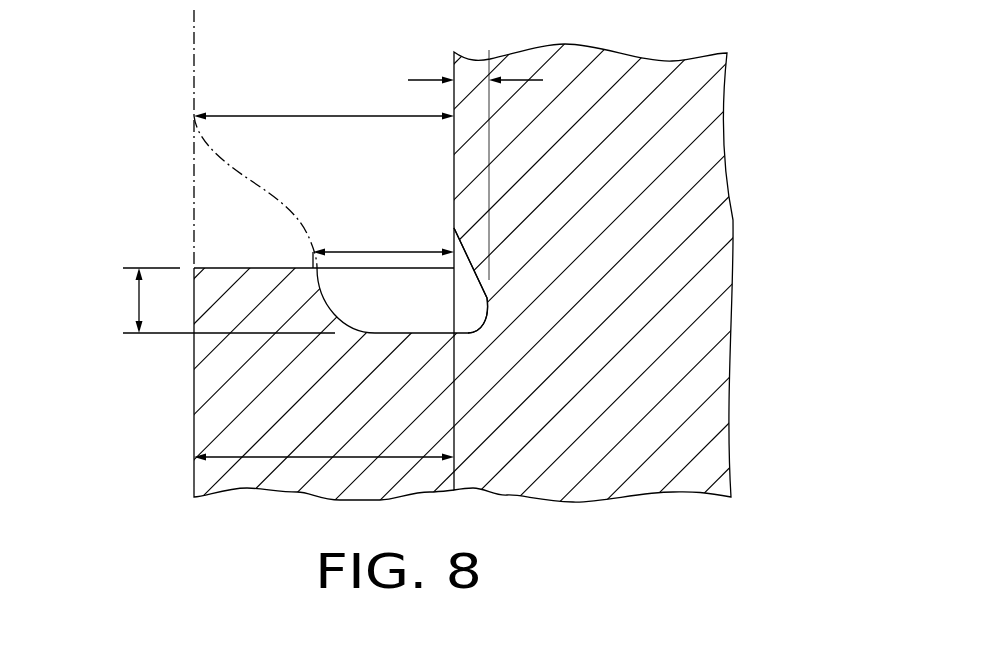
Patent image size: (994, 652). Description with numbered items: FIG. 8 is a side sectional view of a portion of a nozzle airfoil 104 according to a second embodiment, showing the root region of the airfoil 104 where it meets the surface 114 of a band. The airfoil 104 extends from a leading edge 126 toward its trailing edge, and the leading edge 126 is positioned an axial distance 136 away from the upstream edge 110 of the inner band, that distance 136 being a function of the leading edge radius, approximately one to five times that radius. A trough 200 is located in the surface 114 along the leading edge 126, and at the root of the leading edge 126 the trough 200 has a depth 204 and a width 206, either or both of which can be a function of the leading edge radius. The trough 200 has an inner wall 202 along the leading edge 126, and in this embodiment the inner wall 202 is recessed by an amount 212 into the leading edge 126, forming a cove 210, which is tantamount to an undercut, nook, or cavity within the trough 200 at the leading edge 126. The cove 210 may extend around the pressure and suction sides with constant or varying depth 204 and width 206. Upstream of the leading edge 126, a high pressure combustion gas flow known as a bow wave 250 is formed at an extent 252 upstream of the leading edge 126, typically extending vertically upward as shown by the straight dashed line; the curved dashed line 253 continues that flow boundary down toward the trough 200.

The airfoil 104 is at (701, 114).
The upstream edge 110 is at (194, 355).
The surface 114 is at (280, 268).
The leading edge 126 is at (453, 55).
The axial distance 136 is at (320, 458).
The trough 200 is at (350, 333).
The inner wall 202 is at (486, 320).
The depth 204 is at (139, 300).
The width 206 is at (388, 252).
The cove 210 is at (470, 302).
The amount 212 is at (420, 80).
The bow wave 250 is at (194, 63).
The extent 252 is at (333, 116).
The profile line 253 is at (194, 180).